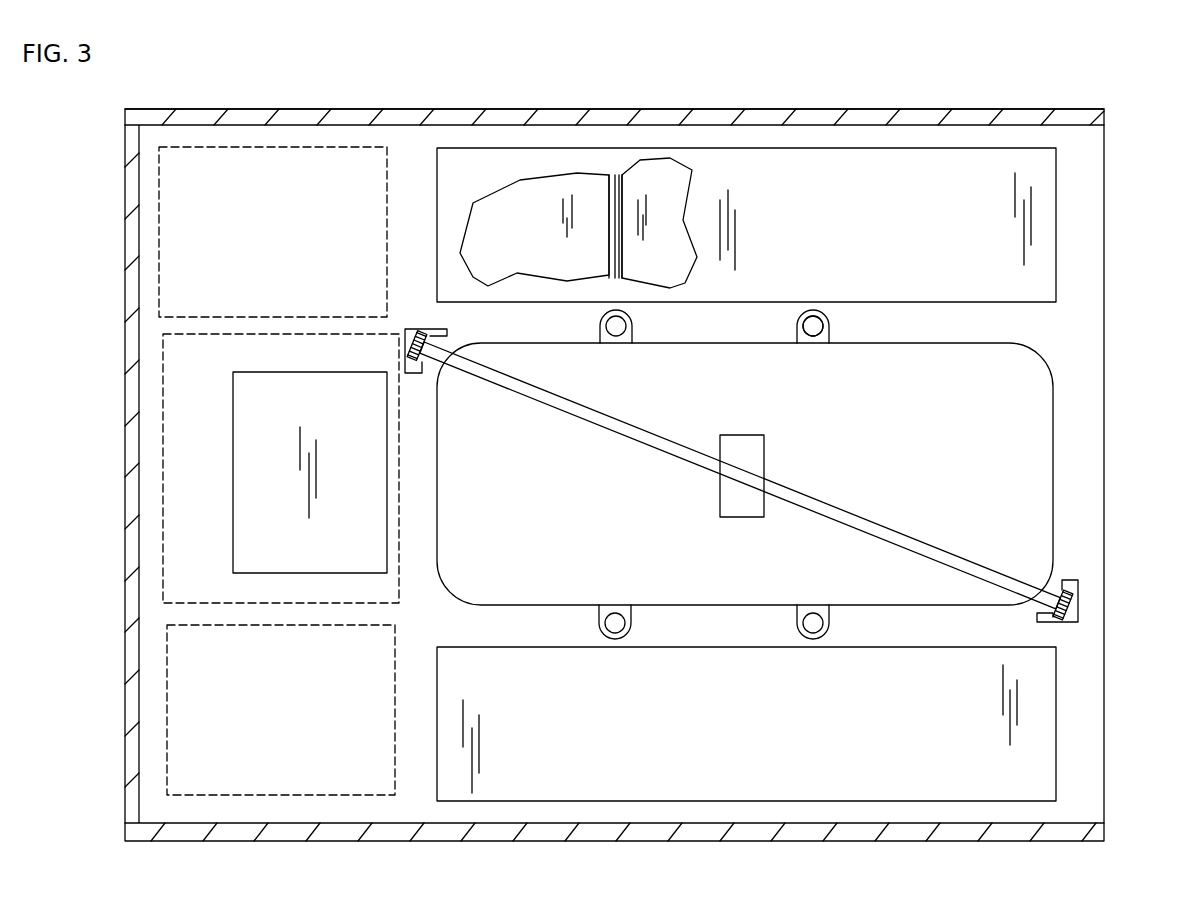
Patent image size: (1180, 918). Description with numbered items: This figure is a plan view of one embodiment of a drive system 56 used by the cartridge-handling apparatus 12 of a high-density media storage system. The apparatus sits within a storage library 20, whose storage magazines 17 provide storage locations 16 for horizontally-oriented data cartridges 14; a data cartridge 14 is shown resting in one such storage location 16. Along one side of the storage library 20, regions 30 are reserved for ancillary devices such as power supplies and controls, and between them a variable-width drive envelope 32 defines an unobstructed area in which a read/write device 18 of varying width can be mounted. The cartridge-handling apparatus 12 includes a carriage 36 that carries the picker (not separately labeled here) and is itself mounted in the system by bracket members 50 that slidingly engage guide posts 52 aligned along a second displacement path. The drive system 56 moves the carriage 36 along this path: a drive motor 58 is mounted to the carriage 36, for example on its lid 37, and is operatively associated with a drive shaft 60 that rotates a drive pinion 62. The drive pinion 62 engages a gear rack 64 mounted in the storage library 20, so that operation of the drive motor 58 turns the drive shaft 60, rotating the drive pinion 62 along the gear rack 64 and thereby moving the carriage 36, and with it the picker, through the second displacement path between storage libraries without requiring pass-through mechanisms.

The cartridge-handling apparatus 12 is at (1075, 481).
The data cartridge 14 is at (530, 207).
The storage location 16 is at (587, 173).
The storage magazine 17 is at (895, 148).
The read/write device 18 is at (233, 547).
The storage library 20 is at (738, 108).
The region 30 is at (160, 195).
The variable-width drive envelope 32 is at (164, 368).
The carriage 36 is at (1053, 438).
The lid 37 is at (1009, 409).
The bracket member 50 is at (830, 333).
The guide post 52 is at (818, 308).
The drive system 56 is at (810, 438).
The drive motor 58 is at (722, 492).
The drive shaft 60 is at (600, 413).
The drive pinion 62 is at (1054, 582).
The gear rack 64 is at (1053, 625).